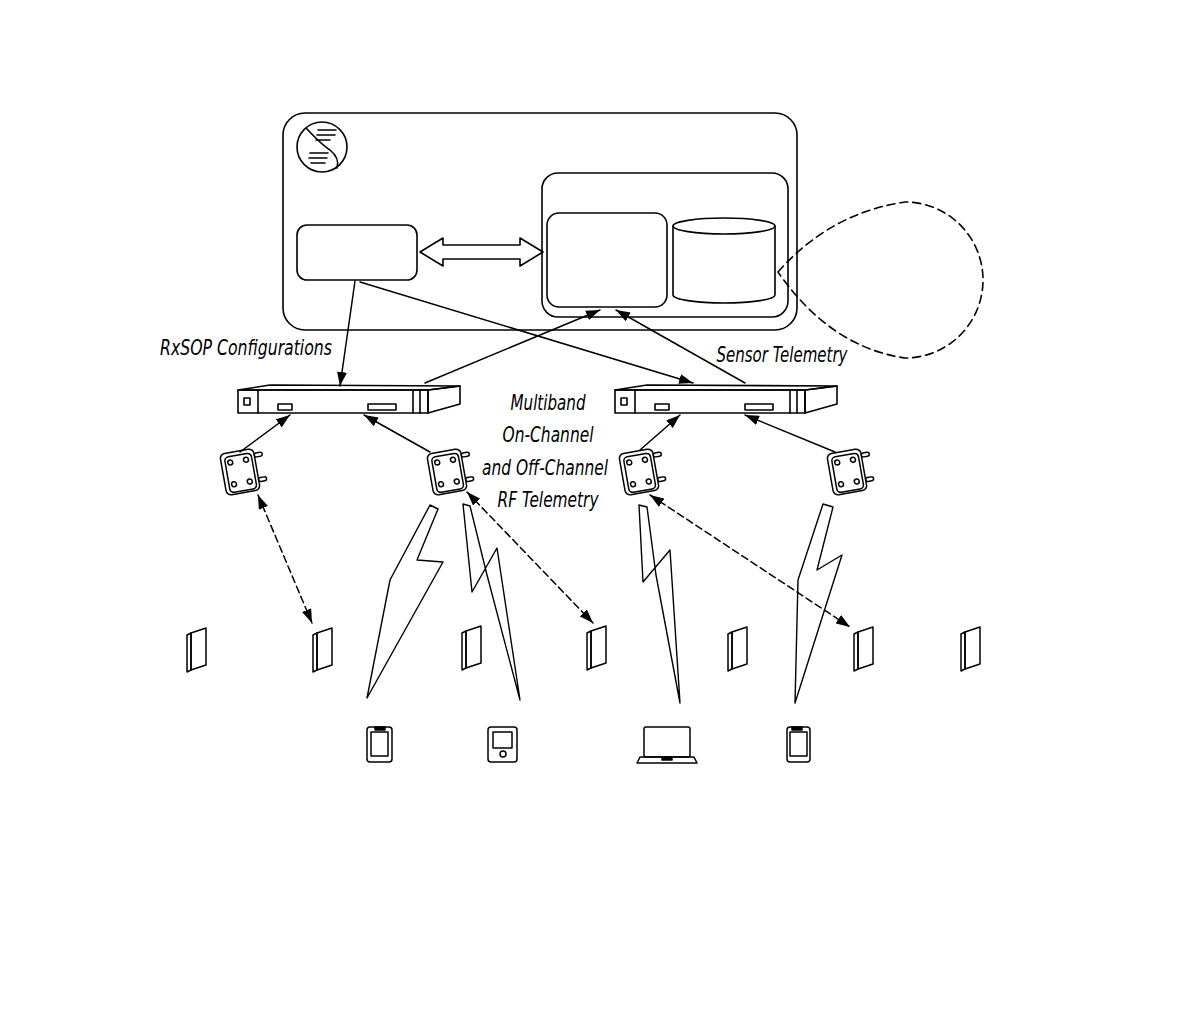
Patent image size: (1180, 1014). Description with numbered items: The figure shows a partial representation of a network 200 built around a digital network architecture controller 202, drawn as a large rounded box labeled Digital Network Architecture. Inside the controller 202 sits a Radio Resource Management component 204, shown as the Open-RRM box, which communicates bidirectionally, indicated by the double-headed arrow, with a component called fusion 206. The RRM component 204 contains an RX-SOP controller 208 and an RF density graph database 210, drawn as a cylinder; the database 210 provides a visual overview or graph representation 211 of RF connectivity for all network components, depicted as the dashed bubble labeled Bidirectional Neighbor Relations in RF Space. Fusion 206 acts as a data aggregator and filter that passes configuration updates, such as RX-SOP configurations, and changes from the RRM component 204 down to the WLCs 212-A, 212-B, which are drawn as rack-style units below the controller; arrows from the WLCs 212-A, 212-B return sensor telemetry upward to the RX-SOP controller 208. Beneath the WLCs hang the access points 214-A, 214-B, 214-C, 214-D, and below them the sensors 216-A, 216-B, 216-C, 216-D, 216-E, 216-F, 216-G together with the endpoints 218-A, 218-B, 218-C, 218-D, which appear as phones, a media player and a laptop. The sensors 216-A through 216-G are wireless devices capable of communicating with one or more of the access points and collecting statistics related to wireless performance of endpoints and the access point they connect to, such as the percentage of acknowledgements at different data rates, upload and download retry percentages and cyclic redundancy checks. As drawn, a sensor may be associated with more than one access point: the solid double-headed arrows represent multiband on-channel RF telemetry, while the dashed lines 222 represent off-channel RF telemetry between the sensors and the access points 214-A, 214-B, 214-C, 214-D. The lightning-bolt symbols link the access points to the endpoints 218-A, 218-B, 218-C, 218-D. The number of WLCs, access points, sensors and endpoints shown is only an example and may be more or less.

The network 200 is at (1050, 133).
The digital network architecture controller 202 is at (538, 113).
The Radio Resource Management component 204 is at (772, 173).
The fusion 206 is at (297, 249).
The RX-SOP controller 208 is at (547, 226).
The RF density graph database 210 is at (776, 240).
The graph representation 211 is at (905, 203).
The WLC 212-A is at (238, 398).
The WLC 212-B is at (835, 387).
The access point 214-A is at (224, 460).
The access point 214-B is at (432, 462).
The access point 214-C is at (660, 470).
The access point 214-D is at (570, 656).
The sensor 216-A is at (198, 674).
The sensor 216-B is at (324, 674).
The sensor 216-C is at (473, 670).
The sensor 216-D is at (598, 672).
The sensor 216-E is at (738, 672).
The sensor 216-F is at (865, 672).
The sensor 216-G is at (969, 672).
The endpoint 218-A is at (380, 764).
The endpoint 218-B is at (503, 764).
The endpoint 218-C is at (667, 766).
The endpoint 218-D is at (797, 764).
The dashed lines 222 is at (268, 528).